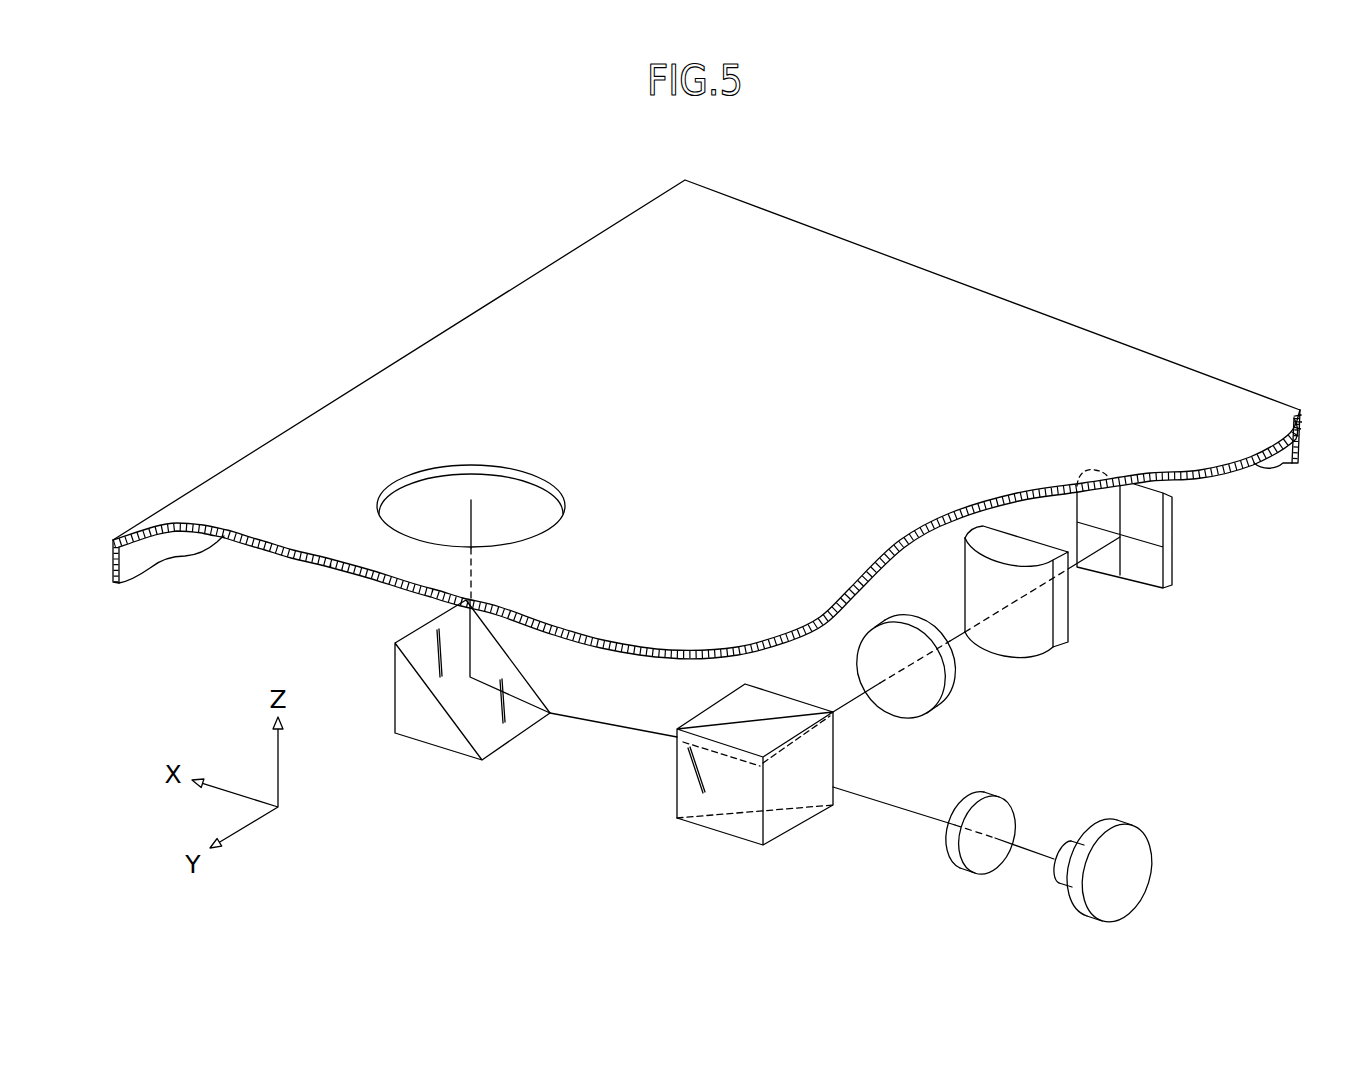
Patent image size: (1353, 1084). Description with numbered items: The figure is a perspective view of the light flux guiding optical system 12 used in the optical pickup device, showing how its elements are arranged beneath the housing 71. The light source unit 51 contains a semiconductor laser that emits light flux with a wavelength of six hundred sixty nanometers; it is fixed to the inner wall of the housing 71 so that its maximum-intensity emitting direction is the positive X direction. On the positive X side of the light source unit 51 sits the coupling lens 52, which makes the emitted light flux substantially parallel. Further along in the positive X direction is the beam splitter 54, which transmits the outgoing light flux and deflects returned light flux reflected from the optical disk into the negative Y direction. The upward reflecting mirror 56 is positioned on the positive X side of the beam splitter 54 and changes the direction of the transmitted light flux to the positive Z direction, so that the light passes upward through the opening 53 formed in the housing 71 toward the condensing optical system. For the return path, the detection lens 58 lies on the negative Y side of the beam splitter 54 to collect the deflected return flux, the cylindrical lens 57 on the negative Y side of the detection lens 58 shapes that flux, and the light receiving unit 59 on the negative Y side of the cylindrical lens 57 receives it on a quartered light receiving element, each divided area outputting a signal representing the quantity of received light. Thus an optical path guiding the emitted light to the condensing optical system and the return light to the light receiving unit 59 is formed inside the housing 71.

The light flux guiding optical system 12 is at (481, 852).
The light source unit 51 is at (1077, 905).
The coupling lens 52 is at (947, 853).
The opening 53 is at (417, 479).
The beam splitter 54 is at (737, 827).
The upward reflecting mirror 56 is at (430, 735).
The cylindrical lens 57 is at (1063, 628).
The detection lens 58 is at (900, 617).
The light receiving unit 59 is at (1170, 567).
The housing 71 is at (953, 277).